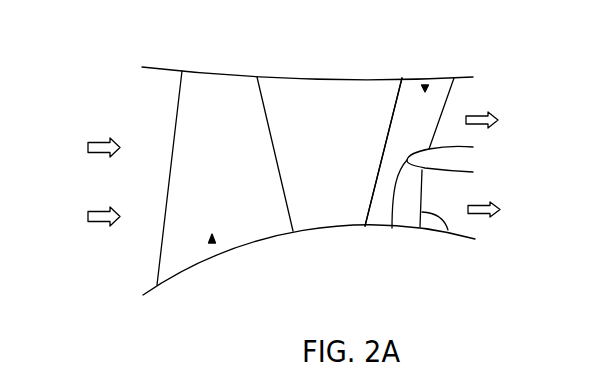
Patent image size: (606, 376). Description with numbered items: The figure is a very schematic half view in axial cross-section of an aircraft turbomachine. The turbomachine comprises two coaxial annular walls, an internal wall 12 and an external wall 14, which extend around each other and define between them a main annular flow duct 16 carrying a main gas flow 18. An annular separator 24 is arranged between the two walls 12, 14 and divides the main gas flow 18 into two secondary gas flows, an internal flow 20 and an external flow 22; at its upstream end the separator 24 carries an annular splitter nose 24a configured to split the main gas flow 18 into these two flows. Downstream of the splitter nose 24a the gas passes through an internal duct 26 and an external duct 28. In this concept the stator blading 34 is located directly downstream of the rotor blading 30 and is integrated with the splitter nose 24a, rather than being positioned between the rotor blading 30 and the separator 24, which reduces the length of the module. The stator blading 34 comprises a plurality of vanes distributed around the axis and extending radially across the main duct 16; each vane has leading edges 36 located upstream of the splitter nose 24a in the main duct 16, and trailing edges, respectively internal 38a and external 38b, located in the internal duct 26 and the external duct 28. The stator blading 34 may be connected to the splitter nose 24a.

The internal annular wall 12 is at (333, 229).
The external annular wall 14 is at (306, 78).
The main annular flow duct 16 is at (339, 125).
The main gas flow 18 is at (103, 158).
The internal secondary gas flow 20 is at (478, 216).
The external secondary gas flow 22 is at (480, 128).
The annular separator 24 is at (466, 160).
The annular splitter nose 24a is at (393, 228).
The internal duct 26 is at (511, 190).
The external duct 28 is at (513, 92).
The rotor blading 30 is at (212, 244).
The stator blading 34 is at (424, 84).
The leading edges 36 is at (368, 197).
The internal trailing edges 38a is at (448, 231).
The external trailing edges 38b is at (455, 78).